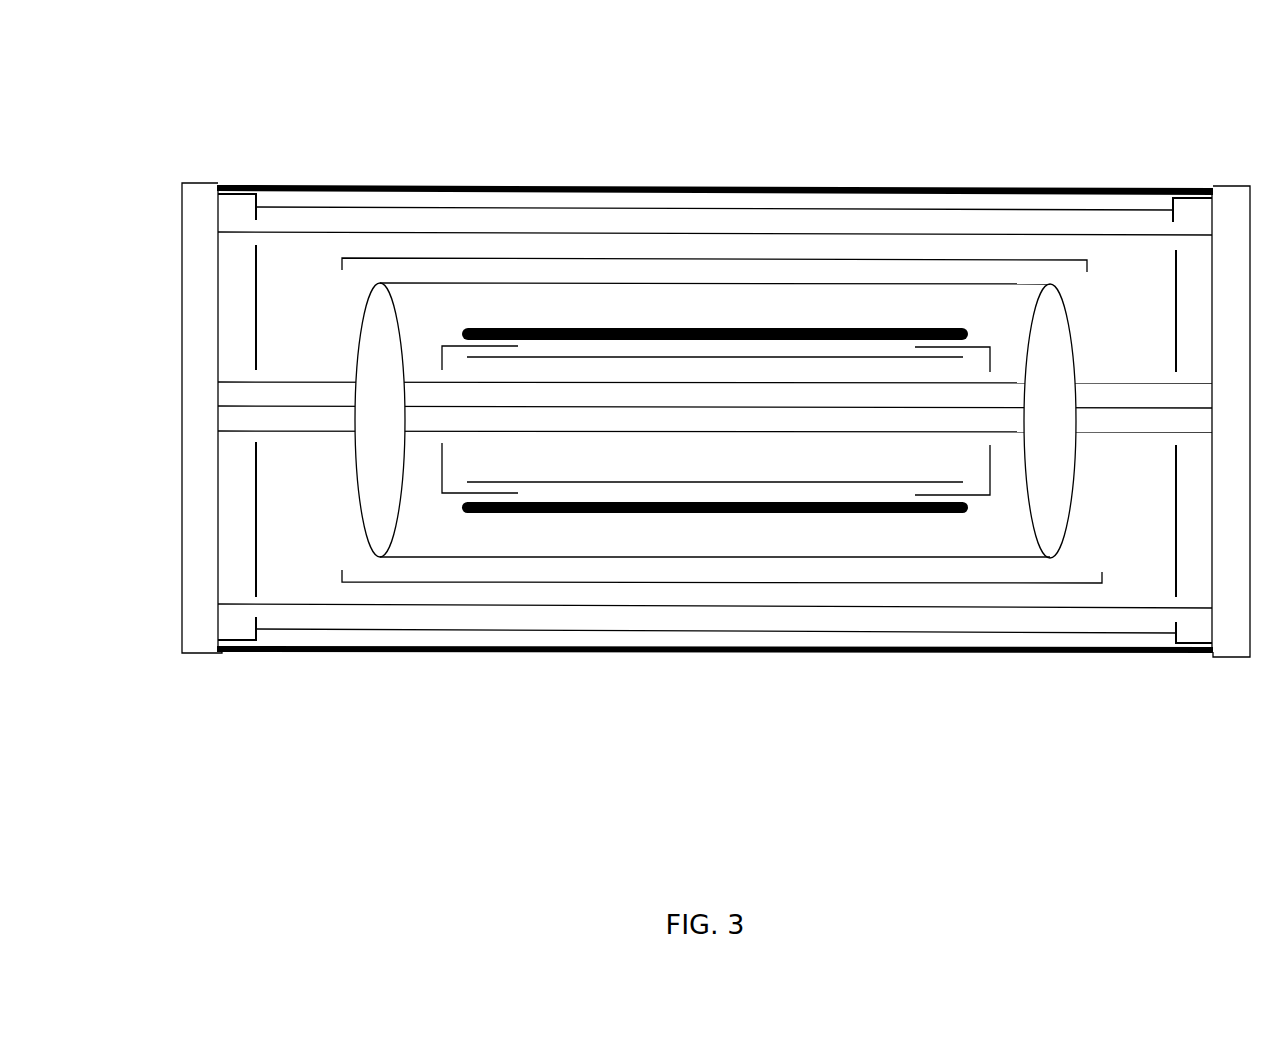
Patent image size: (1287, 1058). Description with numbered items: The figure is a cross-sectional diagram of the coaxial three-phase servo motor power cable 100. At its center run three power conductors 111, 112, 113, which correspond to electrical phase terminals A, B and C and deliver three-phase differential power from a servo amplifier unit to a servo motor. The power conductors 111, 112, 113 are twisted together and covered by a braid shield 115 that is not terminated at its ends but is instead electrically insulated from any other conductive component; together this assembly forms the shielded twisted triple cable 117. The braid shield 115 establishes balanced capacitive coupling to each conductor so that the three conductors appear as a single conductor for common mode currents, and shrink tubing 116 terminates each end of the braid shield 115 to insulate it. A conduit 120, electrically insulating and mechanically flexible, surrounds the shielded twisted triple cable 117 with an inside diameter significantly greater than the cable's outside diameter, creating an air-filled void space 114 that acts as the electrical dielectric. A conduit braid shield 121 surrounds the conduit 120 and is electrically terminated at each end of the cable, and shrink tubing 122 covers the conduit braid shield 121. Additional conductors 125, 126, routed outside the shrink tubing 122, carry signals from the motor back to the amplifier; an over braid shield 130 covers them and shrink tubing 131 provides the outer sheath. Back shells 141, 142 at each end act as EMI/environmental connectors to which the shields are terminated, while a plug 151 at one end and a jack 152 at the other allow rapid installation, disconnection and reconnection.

The coaxial three-phase servo motor power cable 100 is at (935, 105).
The power conductor 111 is at (623, 432).
The power conductor 112 is at (670, 407).
The power conductor 113 is at (716, 383).
The void space 114 is at (710, 307).
The braid shield 115 is at (600, 358).
The shrink tubing 116 is at (448, 340).
The shielded twisted triple cable 117 is at (750, 352).
The conduit 120 is at (665, 332).
The conduit braid shield 121 is at (523, 282).
The shrink tubing 122 is at (580, 258).
The additional conductor 125 is at (973, 235).
The additional conductor 126 is at (1010, 608).
The over braid shield 130 is at (400, 207).
The shrink tubing 131 is at (320, 187).
The back shell 141 is at (237, 207).
The back shell 142 is at (1190, 210).
The plug 151 is at (200, 640).
The jack 152 is at (1237, 647).